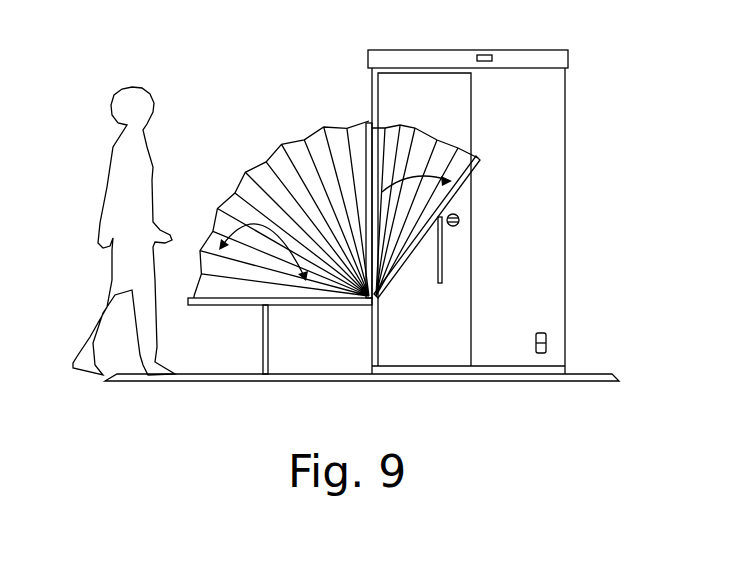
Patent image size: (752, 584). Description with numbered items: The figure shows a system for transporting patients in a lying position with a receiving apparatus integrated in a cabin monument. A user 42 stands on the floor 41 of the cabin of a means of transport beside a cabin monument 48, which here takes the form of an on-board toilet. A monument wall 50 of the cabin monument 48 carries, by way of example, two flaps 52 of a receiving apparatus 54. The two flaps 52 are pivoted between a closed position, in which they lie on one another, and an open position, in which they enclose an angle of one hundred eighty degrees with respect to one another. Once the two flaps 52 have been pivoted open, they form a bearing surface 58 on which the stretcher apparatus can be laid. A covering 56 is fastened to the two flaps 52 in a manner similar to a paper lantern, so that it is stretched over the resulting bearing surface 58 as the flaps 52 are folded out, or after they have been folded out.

The floor 41 is at (318, 368).
The user 42 is at (118, 188).
The cabin monument 48 is at (552, 192).
The monument wall 50 is at (372, 90).
The flaps 52 is at (362, 128).
The receiving apparatus 54 is at (480, 112).
The covering 56 is at (280, 157).
The bearing surface 58 is at (235, 178).